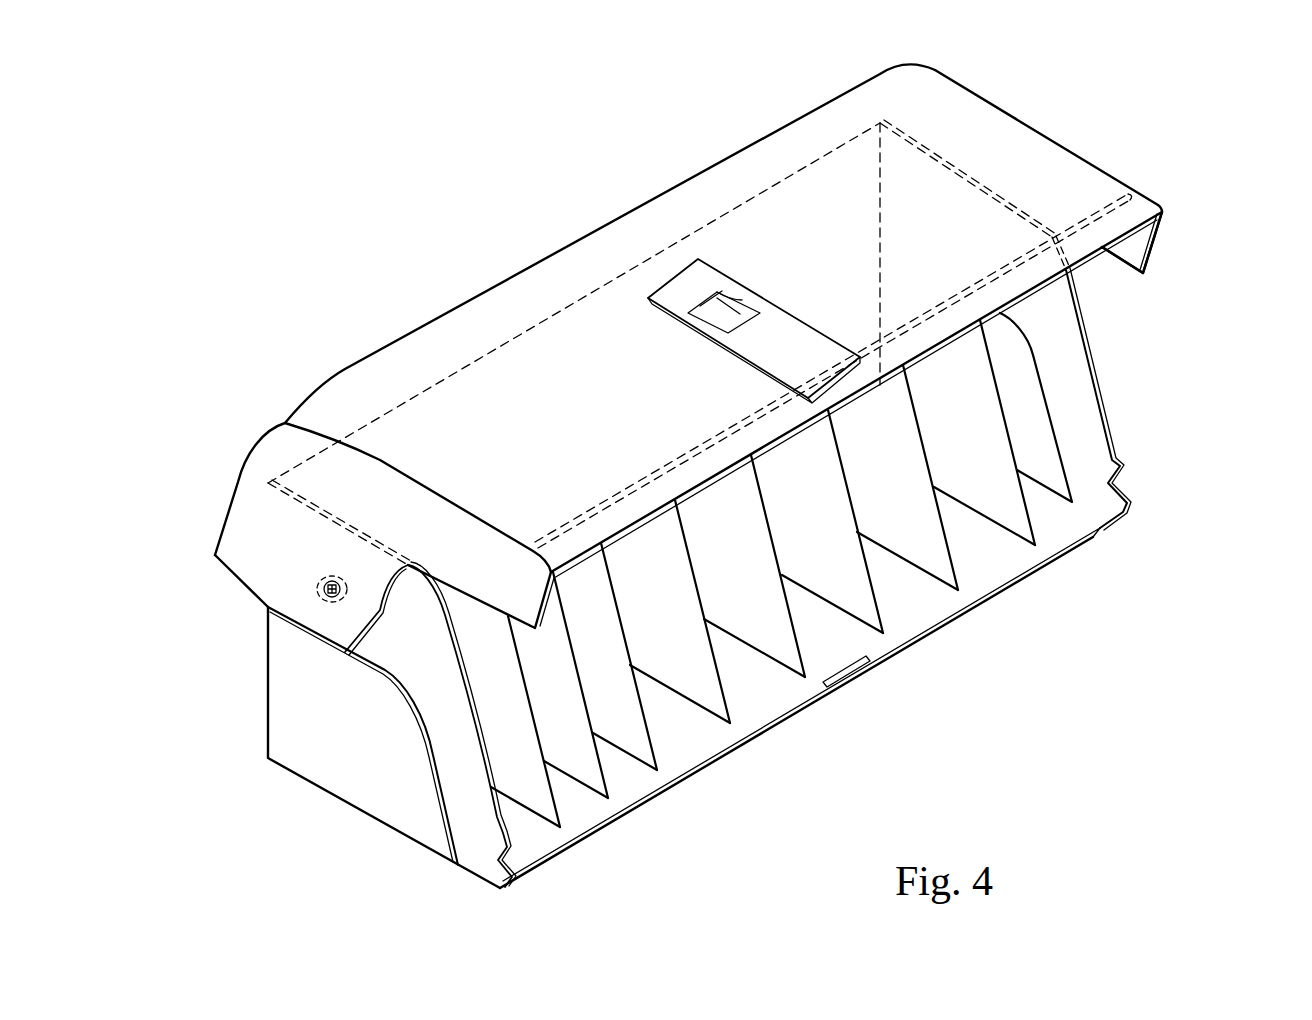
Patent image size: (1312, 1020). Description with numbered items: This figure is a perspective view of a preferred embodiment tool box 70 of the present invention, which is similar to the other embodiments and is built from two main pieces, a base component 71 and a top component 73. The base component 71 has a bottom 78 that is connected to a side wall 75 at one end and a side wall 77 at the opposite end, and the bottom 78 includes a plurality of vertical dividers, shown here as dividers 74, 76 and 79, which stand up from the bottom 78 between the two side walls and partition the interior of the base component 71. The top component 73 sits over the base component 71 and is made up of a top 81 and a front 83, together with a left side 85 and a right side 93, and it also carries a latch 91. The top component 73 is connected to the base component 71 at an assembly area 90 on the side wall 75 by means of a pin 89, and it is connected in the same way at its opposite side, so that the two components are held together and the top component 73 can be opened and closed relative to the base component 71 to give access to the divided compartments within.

The tool box 70 is at (1222, 62).
The base component 71 is at (884, 708).
The top component 73 is at (428, 290).
The divider 74 is at (883, 600).
The side wall 75 is at (375, 797).
The divider 76 is at (960, 560).
The side wall 77 is at (1077, 381).
The bottom 78 is at (678, 763).
The divider 79 is at (1030, 512).
The top 81 is at (232, 506).
The front 83 is at (542, 293).
The left side 85 is at (238, 573).
The pin 89 is at (328, 594).
The assembly area 90 is at (323, 583).
The latch 91 is at (816, 332).
The right side 93 is at (1148, 270).